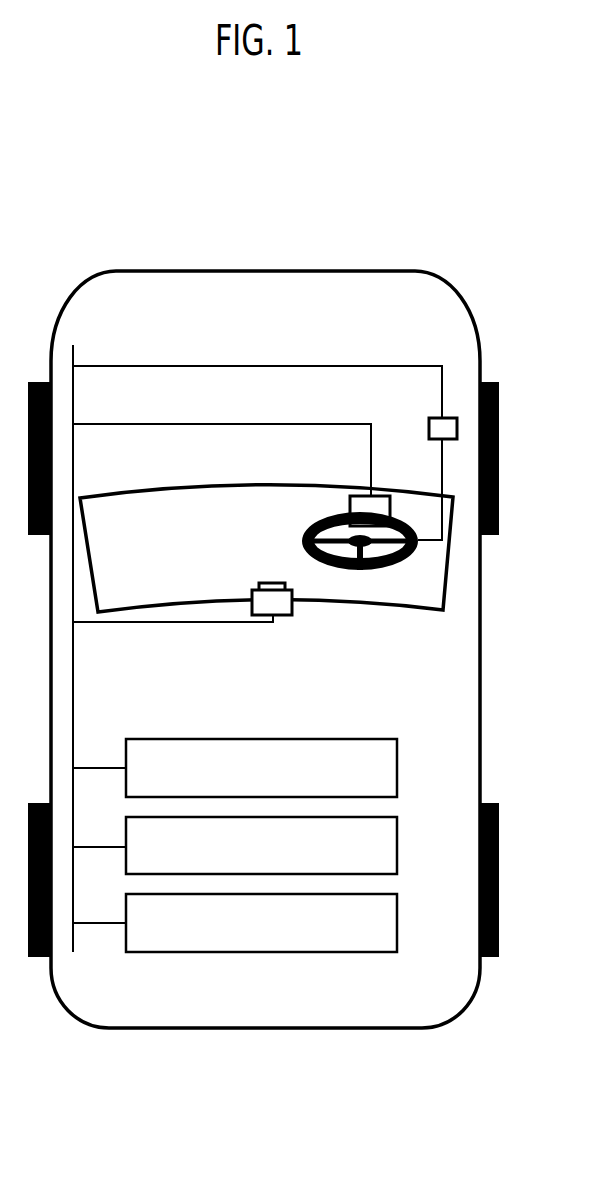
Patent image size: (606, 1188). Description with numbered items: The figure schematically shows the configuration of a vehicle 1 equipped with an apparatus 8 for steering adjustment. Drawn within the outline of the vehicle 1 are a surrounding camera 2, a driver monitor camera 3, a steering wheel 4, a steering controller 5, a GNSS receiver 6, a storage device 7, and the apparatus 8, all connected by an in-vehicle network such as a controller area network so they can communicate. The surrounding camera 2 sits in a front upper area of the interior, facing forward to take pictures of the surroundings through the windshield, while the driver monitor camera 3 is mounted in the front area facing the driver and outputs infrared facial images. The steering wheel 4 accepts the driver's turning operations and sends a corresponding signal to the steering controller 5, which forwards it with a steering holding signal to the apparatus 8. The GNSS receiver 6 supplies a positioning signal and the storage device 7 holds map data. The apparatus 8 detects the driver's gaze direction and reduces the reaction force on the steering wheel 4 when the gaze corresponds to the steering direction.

The vehicle 1 is at (391, 259).
The surrounding camera 2 is at (293, 608).
The driver monitor camera 3 is at (383, 496).
The steering wheel 4 is at (387, 566).
The steering controller 5 is at (453, 418).
The GNSS receiver 6 is at (397, 773).
The storage device 7 is at (397, 850).
The apparatus for steering adjustment 8 is at (397, 927).